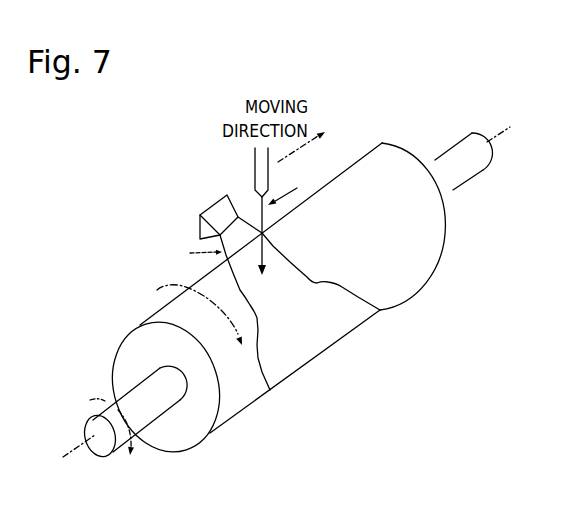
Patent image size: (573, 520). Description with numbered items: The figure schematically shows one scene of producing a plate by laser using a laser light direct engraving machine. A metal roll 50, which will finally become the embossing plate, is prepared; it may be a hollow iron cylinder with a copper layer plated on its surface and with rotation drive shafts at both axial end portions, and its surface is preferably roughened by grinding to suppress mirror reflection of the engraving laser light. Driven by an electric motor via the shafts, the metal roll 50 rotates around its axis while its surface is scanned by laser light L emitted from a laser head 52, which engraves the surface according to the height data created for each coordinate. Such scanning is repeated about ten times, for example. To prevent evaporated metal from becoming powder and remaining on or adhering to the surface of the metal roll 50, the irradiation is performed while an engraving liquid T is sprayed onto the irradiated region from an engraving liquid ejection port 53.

The metal roll 50 is at (117, 320).
The laser head 52 is at (244, 170).
The engraving liquid ejection port 53 is at (189, 218).